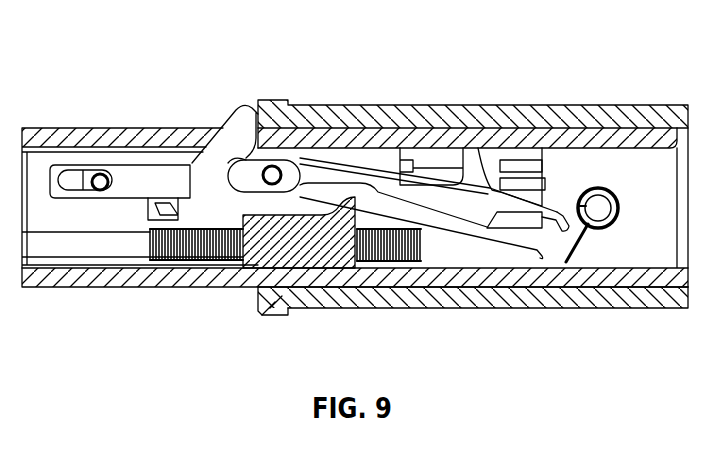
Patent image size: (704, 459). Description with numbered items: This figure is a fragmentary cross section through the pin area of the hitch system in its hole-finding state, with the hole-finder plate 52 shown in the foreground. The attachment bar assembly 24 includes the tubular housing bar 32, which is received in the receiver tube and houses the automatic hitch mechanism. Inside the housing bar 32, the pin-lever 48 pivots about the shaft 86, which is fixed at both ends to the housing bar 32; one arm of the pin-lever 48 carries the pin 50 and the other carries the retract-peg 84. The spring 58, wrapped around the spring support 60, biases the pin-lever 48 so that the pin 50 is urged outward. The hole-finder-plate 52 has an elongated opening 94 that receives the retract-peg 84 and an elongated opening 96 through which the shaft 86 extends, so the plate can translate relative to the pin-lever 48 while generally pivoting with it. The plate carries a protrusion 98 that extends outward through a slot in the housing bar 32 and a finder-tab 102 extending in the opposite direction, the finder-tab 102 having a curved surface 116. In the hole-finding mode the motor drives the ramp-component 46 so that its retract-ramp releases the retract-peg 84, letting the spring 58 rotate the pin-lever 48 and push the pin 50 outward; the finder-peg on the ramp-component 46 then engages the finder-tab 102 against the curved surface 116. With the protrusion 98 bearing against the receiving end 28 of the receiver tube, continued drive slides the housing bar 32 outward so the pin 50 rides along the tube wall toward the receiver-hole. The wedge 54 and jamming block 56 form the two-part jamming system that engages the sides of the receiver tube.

The attachment bar assembly 24 is at (166, 131).
The receiving end 28 is at (250, 302).
The housing bar 32 is at (167, 272).
The ramp-component 46 is at (312, 251).
The pin-lever 48 is at (424, 212).
The pin 50 is at (480, 158).
The hole-finder-plate 52 is at (219, 193).
The wedge 54 is at (522, 228).
The jamming block 56 is at (432, 152).
The spring 58 is at (565, 205).
The spring support 60 is at (607, 222).
The retract-peg 84 is at (98, 190).
The shaft 86 is at (274, 172).
The elongated opening 94 is at (232, 160).
The elongated opening 96 is at (78, 174).
The protrusion 98 is at (240, 118).
The finder-tab 102 is at (152, 216).
The curved surface 116 is at (147, 208).